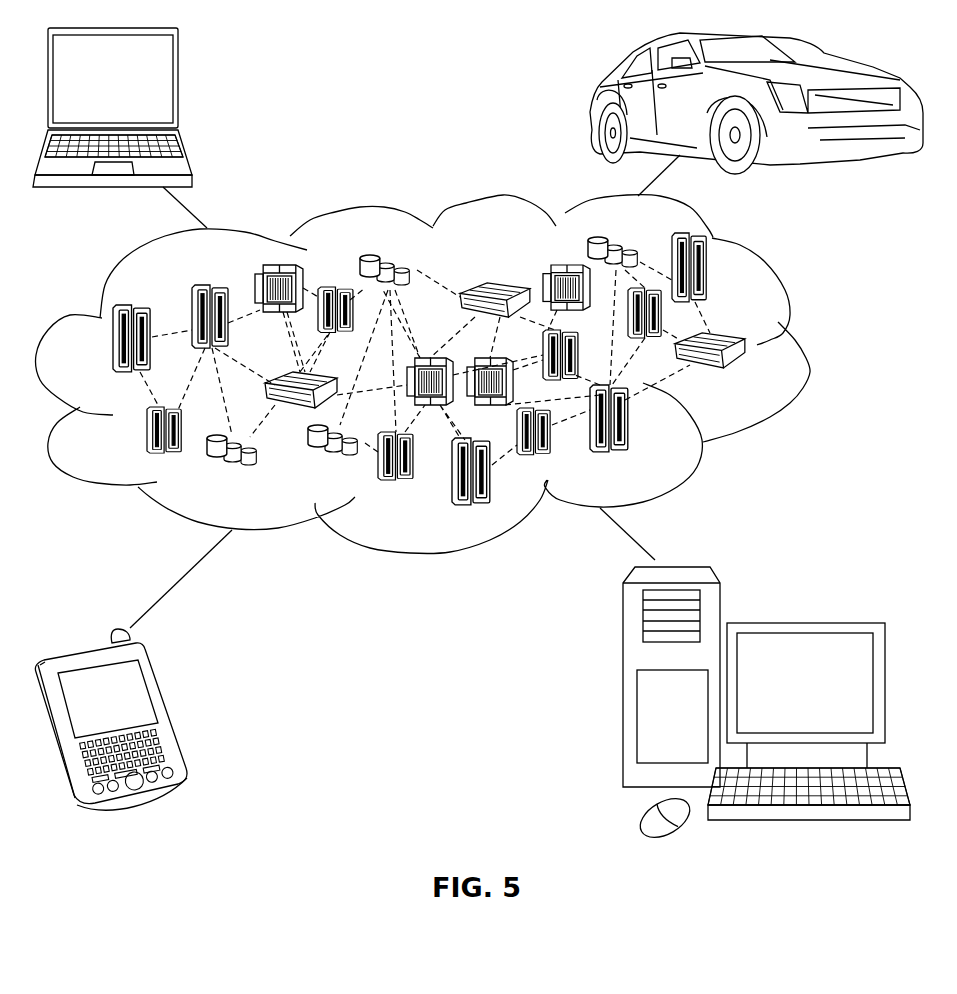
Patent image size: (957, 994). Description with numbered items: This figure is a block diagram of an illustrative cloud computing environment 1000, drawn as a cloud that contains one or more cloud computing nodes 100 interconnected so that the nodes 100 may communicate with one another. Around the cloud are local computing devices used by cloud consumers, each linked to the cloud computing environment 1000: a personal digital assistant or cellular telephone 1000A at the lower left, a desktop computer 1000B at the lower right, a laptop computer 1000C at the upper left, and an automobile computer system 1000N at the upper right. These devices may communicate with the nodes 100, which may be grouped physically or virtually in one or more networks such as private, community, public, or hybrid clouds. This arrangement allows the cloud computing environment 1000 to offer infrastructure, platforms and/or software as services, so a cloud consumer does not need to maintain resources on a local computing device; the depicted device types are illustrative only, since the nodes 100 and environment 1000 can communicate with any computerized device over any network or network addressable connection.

The laptop computer 1000C is at (180, 88).
The automobile computer system 1000N is at (590, 105).
The cloud computing environment 1000 is at (798, 347).
The cloud computing nodes 100 is at (753, 379).
The personal digital assistant (PDA) or cellular telephone 1000A is at (172, 712).
The desktop computer 1000B is at (802, 620).